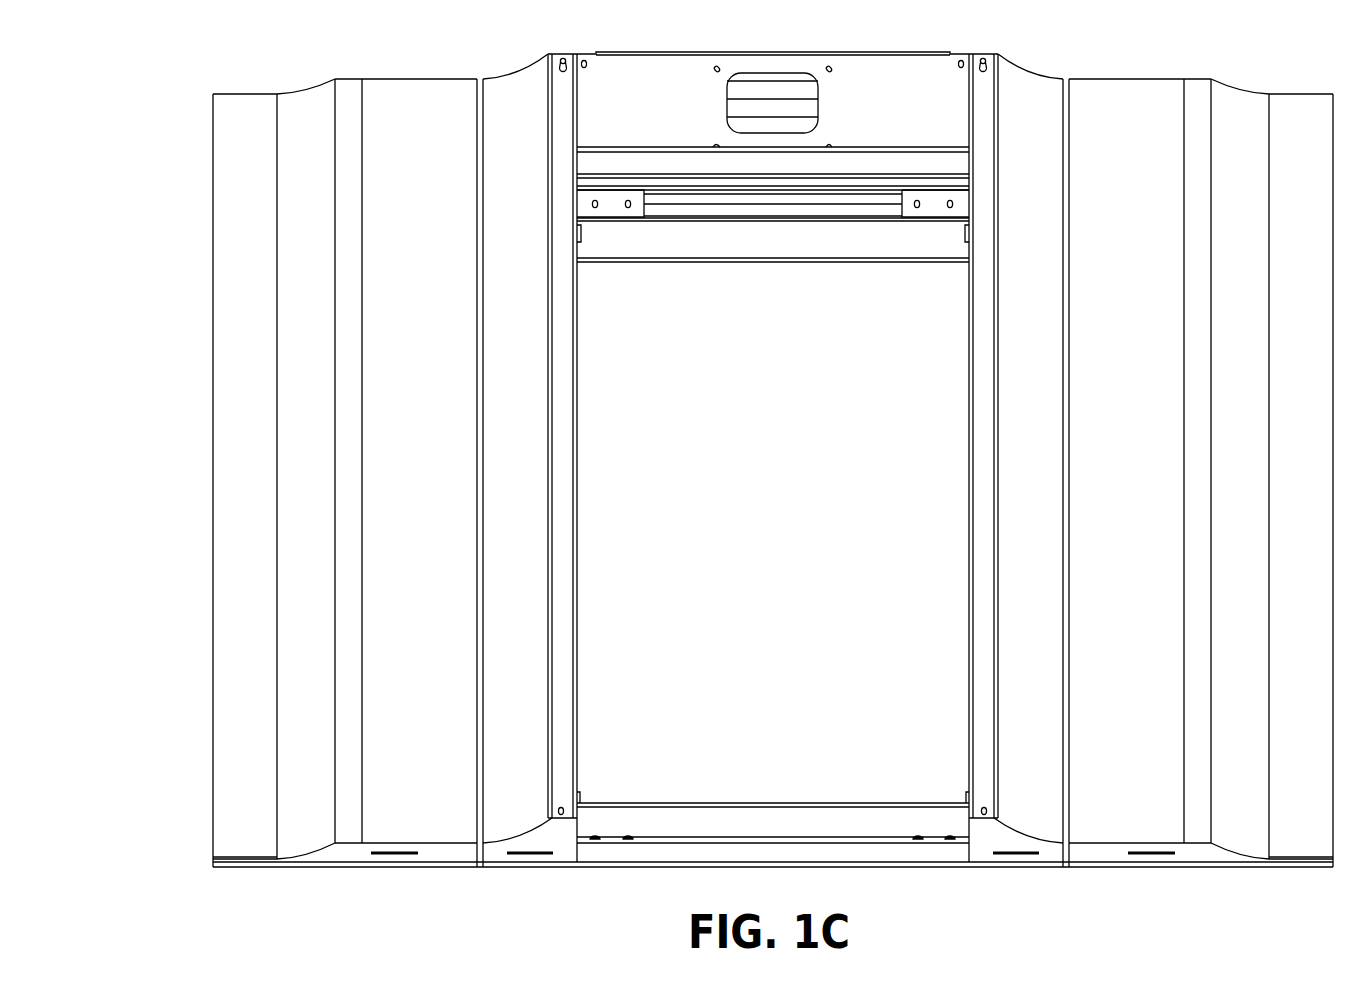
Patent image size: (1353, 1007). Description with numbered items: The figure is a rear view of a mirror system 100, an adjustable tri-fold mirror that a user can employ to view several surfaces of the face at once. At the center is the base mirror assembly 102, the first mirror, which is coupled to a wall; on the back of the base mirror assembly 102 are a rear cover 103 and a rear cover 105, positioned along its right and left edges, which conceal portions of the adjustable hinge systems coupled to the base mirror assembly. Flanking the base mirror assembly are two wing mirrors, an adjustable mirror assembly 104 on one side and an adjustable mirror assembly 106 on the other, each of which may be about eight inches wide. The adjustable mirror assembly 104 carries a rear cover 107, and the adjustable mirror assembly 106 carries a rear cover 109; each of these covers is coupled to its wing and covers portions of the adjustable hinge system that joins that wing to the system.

The mirror system 100 is at (167, 93).
The base mirror assembly 102 is at (890, 793).
The rear cover 103 is at (1034, 87).
The adjustable mirror assembly 104 is at (1157, 806).
The rear cover 105 is at (516, 88).
The adjustable mirror assembly 106 is at (415, 797).
The rear cover 107 is at (1125, 95).
The rear cover 109 is at (405, 93).